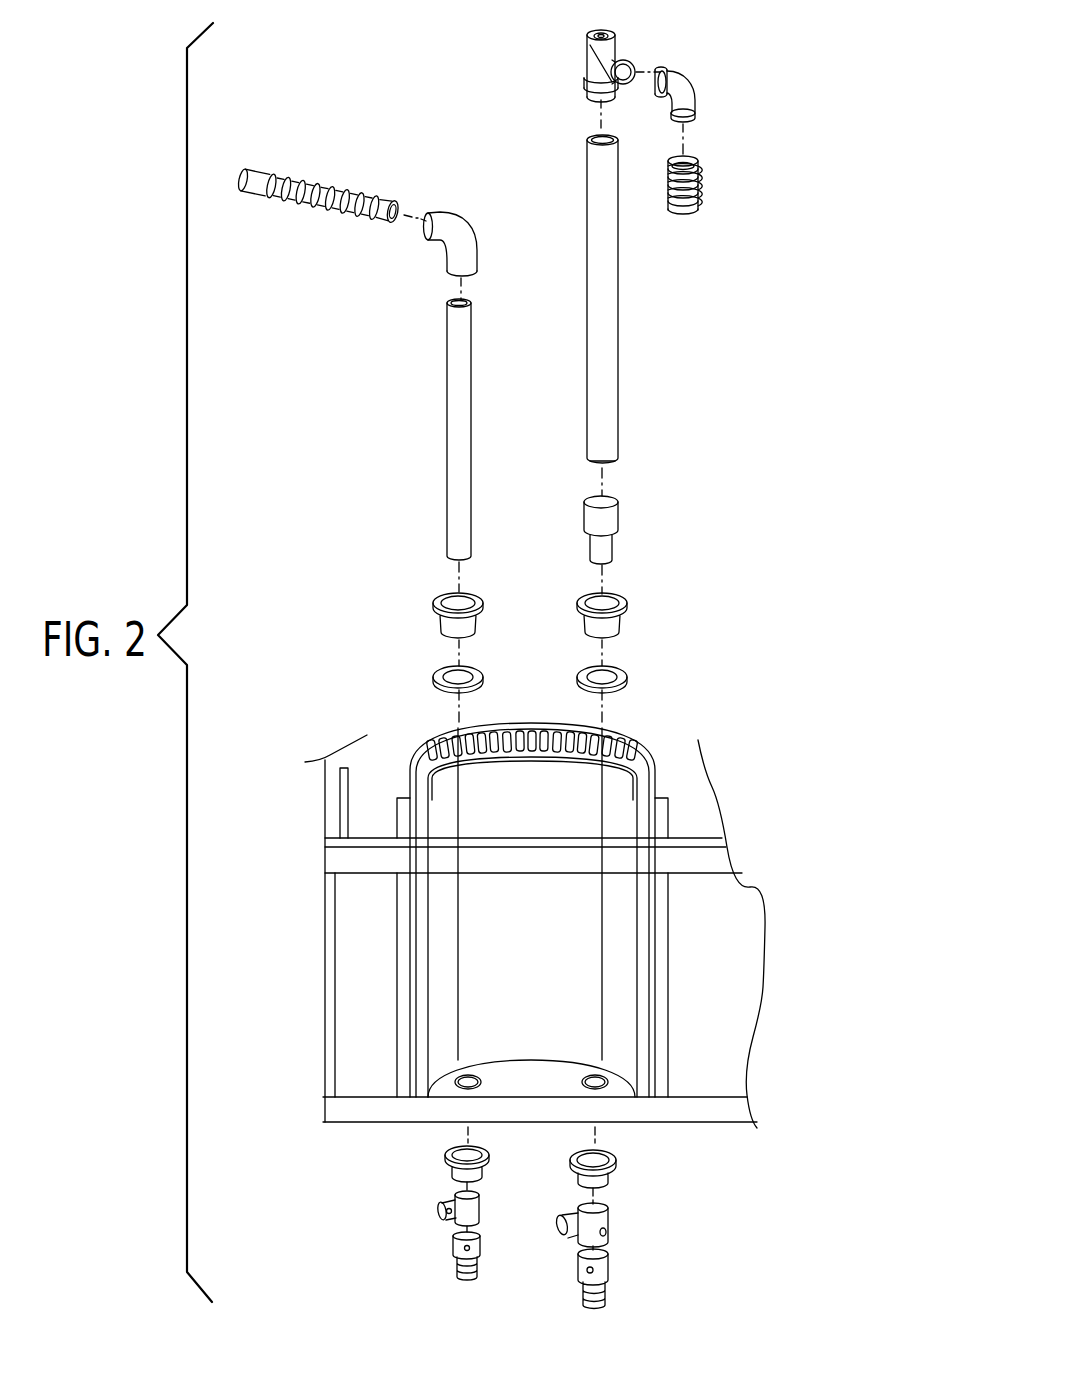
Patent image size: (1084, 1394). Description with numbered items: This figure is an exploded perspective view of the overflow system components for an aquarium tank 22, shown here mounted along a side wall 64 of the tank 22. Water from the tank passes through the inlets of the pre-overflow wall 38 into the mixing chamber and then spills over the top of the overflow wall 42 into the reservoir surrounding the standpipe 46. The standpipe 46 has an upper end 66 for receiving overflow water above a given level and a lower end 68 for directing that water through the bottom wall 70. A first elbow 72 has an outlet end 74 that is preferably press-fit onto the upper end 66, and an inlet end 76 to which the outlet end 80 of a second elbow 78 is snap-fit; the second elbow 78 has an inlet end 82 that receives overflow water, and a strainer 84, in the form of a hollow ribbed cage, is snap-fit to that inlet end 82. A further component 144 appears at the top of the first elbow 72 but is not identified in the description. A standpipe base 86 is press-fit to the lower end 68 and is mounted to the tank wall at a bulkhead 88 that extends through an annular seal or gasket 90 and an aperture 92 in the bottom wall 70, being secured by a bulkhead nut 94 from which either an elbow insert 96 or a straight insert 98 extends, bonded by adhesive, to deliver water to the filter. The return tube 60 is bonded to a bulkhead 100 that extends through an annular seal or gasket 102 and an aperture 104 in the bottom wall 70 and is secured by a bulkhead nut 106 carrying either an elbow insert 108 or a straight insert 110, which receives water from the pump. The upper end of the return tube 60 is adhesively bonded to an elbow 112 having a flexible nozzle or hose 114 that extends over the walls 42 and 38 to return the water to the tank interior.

The aquarium tank 22 is at (322, 901).
The pre-overflow wall 38 is at (668, 813).
The overflow wall 42 is at (655, 758).
The standpipe 46 is at (612, 310).
The return tube 60 is at (453, 430).
The side wall 64 is at (718, 858).
The upper end 66 is at (582, 138).
The lower end 68 is at (618, 463).
The bottom wall 70 is at (737, 1124).
The first elbow 72 is at (587, 58).
The outlet end 74 is at (588, 95).
The inlet end 76 is at (633, 53).
The second elbow 78 is at (693, 90).
The outlet end 80 is at (673, 72).
The inlet end 82 is at (692, 120).
The strainer 84 is at (697, 187).
The standpipe base 86 is at (618, 520).
The bulkhead 88 is at (620, 620).
The annular seal or gasket 90 is at (627, 677).
The aperture 92 is at (593, 1075).
The bulkhead nut 94 is at (613, 1160).
The elbow insert 96 is at (608, 1223).
The straight insert 98 is at (603, 1270).
The bulkhead 100 is at (443, 625).
The annular seal or gasket 102 is at (438, 675).
The aperture 104 is at (470, 1075).
The bulkhead nut 106 is at (450, 1152).
The elbow insert 108 is at (445, 1198).
The straight insert 110 is at (458, 1247).
The elbow 112 is at (453, 223).
The flexible nozzle or hose 114 is at (247, 180).
The valve top nipple 144 is at (610, 30).